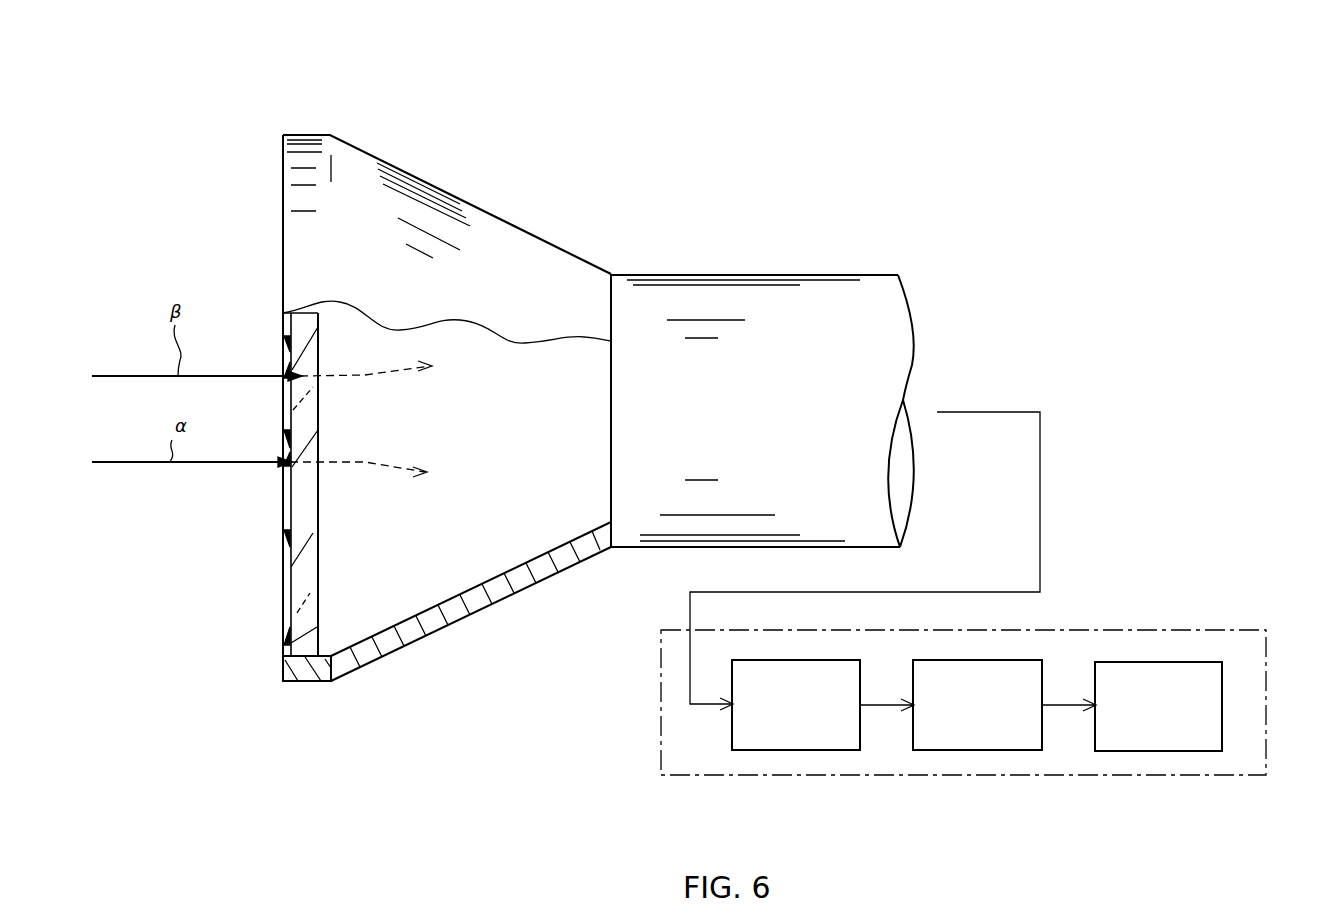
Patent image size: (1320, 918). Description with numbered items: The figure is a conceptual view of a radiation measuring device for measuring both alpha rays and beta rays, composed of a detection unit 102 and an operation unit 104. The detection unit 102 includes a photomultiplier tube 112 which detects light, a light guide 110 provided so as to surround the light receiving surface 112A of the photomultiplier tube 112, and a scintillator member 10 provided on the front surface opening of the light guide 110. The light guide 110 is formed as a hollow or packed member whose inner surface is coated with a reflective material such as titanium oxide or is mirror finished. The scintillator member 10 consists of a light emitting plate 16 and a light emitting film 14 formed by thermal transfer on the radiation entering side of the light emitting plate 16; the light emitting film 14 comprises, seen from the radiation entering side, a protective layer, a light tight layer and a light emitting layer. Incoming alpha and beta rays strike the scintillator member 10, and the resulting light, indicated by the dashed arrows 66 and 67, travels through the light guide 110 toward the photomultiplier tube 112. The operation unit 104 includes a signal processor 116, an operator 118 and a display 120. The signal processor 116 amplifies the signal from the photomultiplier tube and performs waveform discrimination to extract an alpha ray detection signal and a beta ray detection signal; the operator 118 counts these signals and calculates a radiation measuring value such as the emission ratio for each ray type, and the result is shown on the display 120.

The scintillator member 10 is at (264, 632).
The light emitting film 14 is at (283, 560).
The light emitting plate 16 is at (318, 625).
The alpha-induced light signal 66 is at (367, 458).
The beta-induced light signal 67 is at (365, 382).
The detection unit 102 is at (766, 122).
The operation unit 104 is at (1105, 630).
The light guide 110 is at (490, 212).
The photomultiplier tube 112 is at (780, 275).
The light receiving surface 112A is at (611, 484).
The signal processor 116 is at (812, 660).
The operator 118 is at (975, 660).
The display 120 is at (1150, 662).